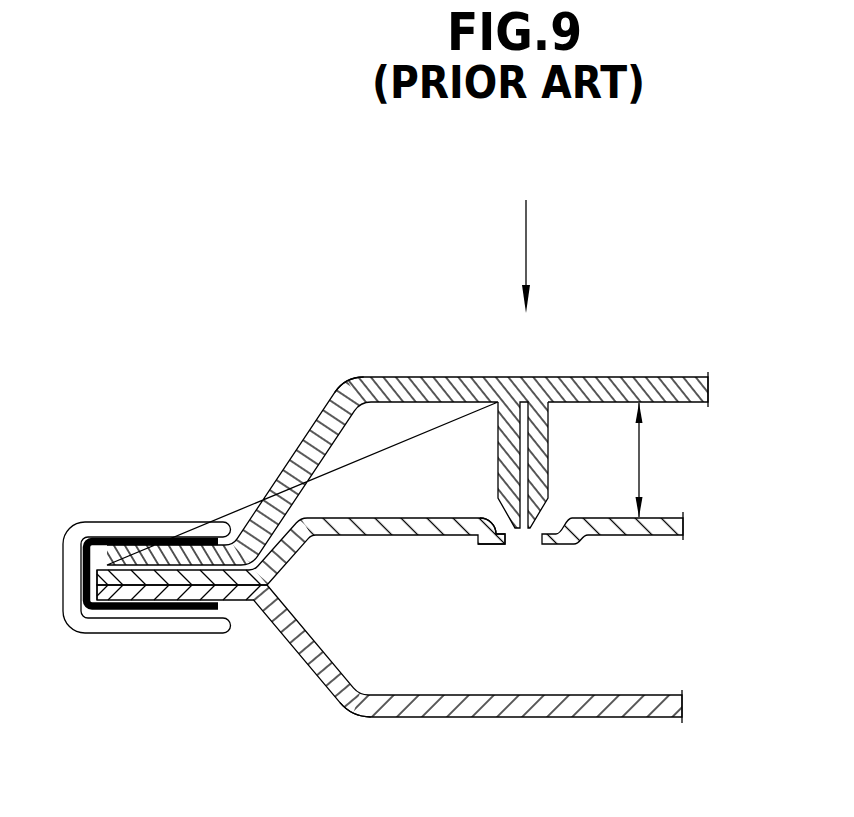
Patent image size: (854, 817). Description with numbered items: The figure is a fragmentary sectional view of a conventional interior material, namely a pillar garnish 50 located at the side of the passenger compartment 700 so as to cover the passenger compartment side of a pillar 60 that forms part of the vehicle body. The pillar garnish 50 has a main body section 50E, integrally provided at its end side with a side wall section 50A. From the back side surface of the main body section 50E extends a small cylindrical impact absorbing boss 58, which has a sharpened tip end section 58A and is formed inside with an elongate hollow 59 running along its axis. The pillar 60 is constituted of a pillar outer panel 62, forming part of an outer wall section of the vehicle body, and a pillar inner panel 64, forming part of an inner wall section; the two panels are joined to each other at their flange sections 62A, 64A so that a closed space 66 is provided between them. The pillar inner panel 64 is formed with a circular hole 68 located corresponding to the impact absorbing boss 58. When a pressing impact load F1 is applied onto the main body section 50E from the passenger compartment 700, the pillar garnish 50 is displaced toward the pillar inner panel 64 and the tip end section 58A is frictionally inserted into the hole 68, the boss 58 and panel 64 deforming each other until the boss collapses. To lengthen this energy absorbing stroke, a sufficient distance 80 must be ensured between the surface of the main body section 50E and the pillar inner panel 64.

The pillar garnish 50 is at (690, 378).
The side wall section 50A is at (293, 460).
The main body section 50E is at (600, 377).
The elongate hollow 59 is at (435, 377).
The impact absorbing boss 58 is at (498, 453).
The tip end section 58A is at (482, 540).
The pillar 60 is at (352, 716).
The pillar outer panel 62 is at (653, 697).
The flange section of pillar outer panel 62A is at (130, 593).
The pillar inner panel 64 is at (672, 540).
The flange section of pillar inner panel 64A is at (100, 573).
The closed space 66 is at (542, 665).
The circular hole 68 is at (540, 542).
The distance 80 is at (640, 458).
The passenger compartment 700 is at (677, 290).
The pressing impact load F1 is at (528, 240).